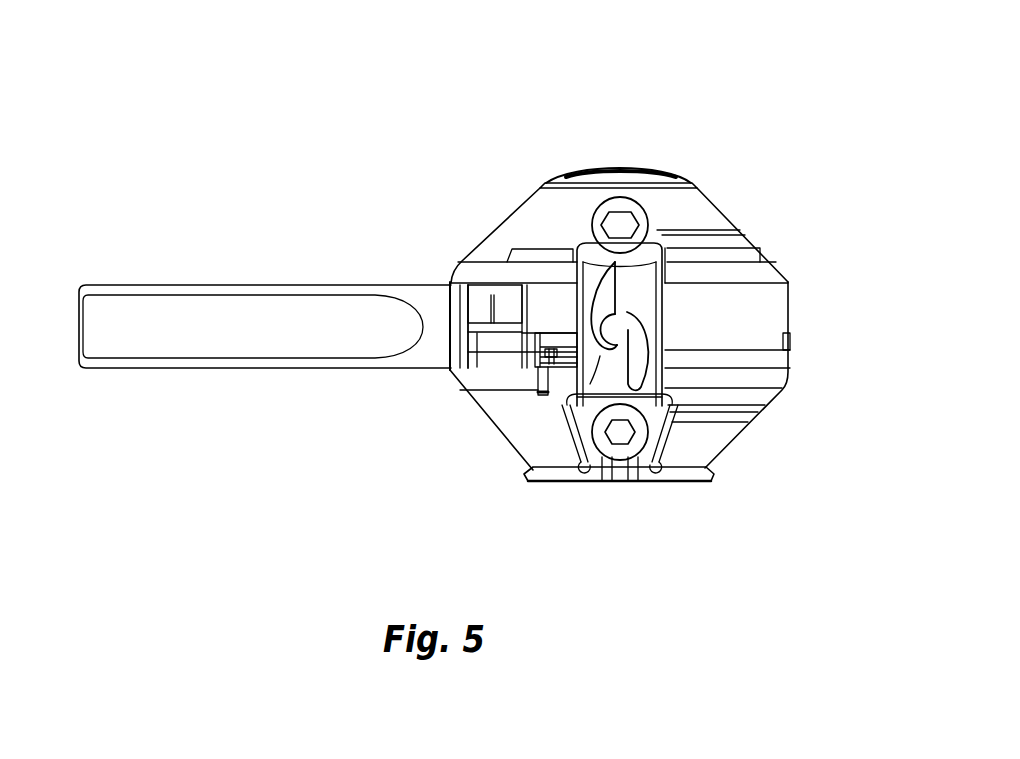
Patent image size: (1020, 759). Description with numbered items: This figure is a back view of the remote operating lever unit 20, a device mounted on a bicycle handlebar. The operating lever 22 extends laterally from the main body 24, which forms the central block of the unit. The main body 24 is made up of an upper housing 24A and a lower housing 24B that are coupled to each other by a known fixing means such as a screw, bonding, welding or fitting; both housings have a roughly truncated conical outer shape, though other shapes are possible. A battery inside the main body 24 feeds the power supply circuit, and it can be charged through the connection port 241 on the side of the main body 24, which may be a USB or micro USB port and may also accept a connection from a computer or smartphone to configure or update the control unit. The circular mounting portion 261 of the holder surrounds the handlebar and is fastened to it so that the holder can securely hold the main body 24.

The remote operating lever unit 20 is at (488, 179).
The operating lever 22 is at (170, 284).
The main body 24 is at (688, 179).
The upper housing 24A is at (742, 220).
The lower housing 24B is at (732, 441).
The connection port 241 is at (553, 355).
The mounting portion 261 is at (600, 363).